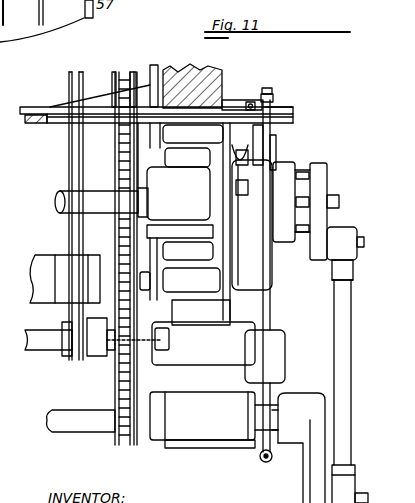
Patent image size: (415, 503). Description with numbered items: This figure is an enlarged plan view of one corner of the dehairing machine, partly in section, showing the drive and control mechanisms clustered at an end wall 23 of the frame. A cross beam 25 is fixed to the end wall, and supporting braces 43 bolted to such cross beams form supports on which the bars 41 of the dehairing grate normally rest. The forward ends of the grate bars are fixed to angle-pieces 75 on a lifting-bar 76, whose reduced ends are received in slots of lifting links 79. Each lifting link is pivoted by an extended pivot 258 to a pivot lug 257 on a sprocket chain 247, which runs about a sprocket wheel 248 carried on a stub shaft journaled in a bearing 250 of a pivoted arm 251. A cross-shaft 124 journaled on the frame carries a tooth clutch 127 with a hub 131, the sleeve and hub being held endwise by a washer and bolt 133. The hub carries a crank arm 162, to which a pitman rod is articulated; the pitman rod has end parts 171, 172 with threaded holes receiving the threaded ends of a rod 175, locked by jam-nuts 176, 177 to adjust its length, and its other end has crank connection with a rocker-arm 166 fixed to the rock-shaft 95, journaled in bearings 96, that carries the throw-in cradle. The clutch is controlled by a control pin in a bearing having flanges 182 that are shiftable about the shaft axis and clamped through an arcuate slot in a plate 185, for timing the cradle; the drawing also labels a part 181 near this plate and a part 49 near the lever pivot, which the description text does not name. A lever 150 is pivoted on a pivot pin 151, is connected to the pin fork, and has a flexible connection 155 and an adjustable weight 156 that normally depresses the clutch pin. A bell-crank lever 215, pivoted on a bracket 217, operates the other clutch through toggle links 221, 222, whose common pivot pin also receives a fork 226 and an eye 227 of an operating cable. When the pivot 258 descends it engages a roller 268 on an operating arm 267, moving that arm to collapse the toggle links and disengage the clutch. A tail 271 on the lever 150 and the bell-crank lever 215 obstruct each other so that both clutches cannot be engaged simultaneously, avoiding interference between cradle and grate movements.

The bracket 217 is at (58, 108).
The bars 41 is at (74, 137).
The supporting braces 43 is at (70, 162).
The sprocket chains 247 is at (137, 64).
The end wall 23 is at (185, 80).
The toggle link 222 is at (231, 100).
The eye 227 is at (250, 102).
The tail 271 is at (272, 92).
The fork 226 is at (269, 100).
The toggle link 221 is at (285, 116).
The lever 150 is at (267, 290).
The flexible connection 155 is at (262, 462).
The weight 156 is at (279, 358).
The pivot pin 151 is at (277, 138).
The bar 49 is at (270, 148).
The tooth clutch 127 is at (313, 148).
The hub 131 is at (315, 176).
The bolt 133 is at (333, 205).
The crank arm 162 is at (320, 238).
The end part 171 is at (348, 262).
The jam-nut 176 is at (343, 280).
The rod 175 is at (343, 368).
The jam-nut 177 is at (348, 468).
The end part 172 is at (352, 495).
The rocker-arm 166 is at (322, 470).
The cross-shaft 124 is at (80, 202).
The cross beam 25 is at (43, 262).
The lifting-bar 76 is at (55, 345).
The angle-pieces 75 is at (66, 356).
The lifting links 79 is at (97, 352).
The rock-shaft 95 is at (100, 421).
The bell-crank lever 215 is at (184, 221).
The flanges 182 is at (226, 163).
The plate 185 is at (220, 187).
The housing 181 is at (223, 186).
The operating arm 267 is at (156, 258).
The roller 268 is at (149, 283).
The arms 251 is at (195, 316).
The pivot 258 is at (110, 345).
The pivot lug 257 is at (142, 348).
The sprocket wheels 248 is at (150, 392).
The bearings 250 is at (243, 416).
The bearings 96 is at (205, 448).